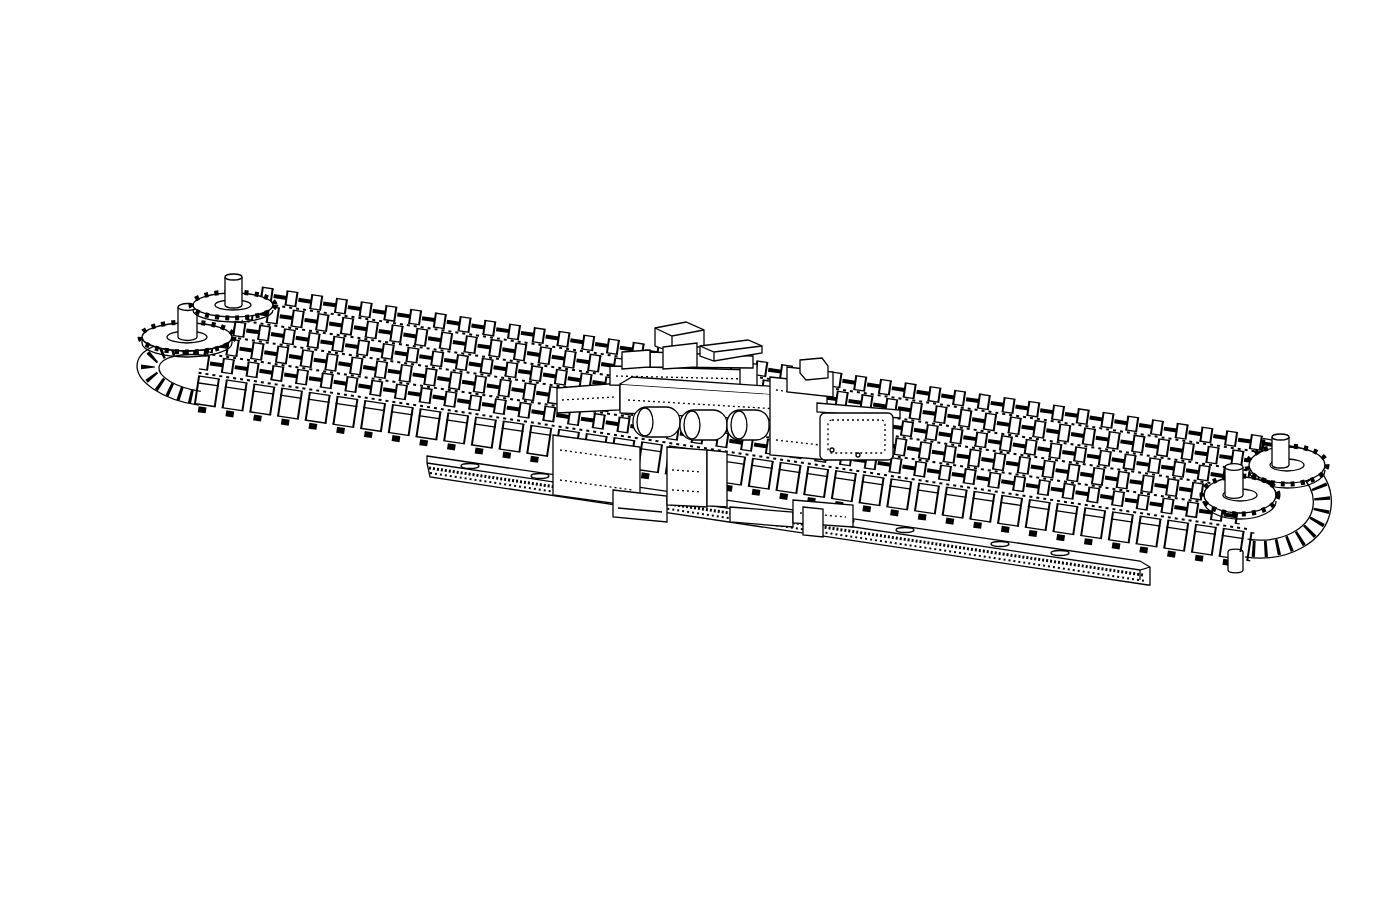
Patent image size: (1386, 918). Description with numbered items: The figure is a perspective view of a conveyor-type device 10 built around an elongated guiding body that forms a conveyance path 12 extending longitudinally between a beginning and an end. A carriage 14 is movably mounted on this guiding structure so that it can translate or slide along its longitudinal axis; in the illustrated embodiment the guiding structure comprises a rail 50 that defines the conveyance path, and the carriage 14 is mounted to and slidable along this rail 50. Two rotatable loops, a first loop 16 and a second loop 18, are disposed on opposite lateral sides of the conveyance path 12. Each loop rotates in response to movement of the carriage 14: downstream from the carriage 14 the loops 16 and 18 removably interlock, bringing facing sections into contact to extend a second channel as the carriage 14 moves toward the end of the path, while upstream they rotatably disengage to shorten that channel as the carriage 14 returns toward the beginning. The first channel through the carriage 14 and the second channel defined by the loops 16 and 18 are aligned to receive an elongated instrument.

The conveyor-type device 10 is at (1186, 139).
The conveyance path 12 is at (455, 532).
The carriage 14 is at (772, 326).
The first loop 16 is at (1150, 374).
The second loop 18 is at (1213, 598).
The rail 50 is at (880, 548).